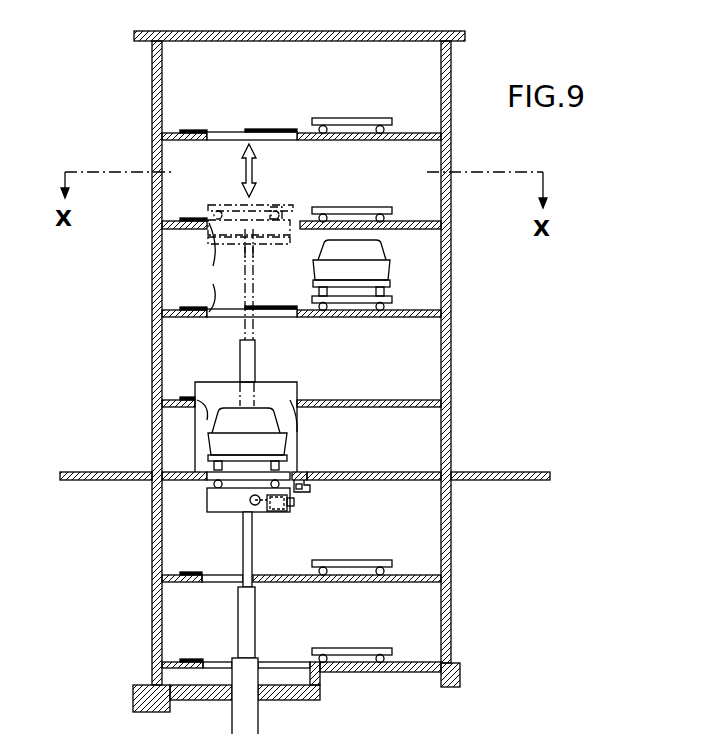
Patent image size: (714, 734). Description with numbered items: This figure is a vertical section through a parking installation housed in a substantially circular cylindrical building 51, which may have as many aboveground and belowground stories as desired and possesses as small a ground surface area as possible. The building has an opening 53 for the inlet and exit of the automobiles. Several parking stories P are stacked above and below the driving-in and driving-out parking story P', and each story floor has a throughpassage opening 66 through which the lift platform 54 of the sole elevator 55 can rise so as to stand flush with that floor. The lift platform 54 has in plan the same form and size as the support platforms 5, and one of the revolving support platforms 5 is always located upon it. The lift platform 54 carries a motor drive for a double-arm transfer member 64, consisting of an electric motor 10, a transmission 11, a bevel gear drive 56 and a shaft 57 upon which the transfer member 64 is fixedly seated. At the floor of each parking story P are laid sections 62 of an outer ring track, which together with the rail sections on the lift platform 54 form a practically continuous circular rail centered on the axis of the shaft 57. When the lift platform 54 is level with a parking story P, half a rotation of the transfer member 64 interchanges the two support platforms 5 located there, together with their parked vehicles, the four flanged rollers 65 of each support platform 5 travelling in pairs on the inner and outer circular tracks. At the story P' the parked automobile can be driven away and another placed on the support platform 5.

The support platform 5 is at (353, 118).
The electric motor 10 is at (258, 512).
The transmission 11 is at (285, 513).
The building 51 is at (452, 372).
The opening 53 is at (287, 400).
The lift platform 54 is at (240, 490).
The elevator 55 is at (245, 622).
The bevel gear drive 56 is at (296, 503).
The shaft 57 is at (311, 490).
The outer ring track section 62 is at (275, 130).
The transfer member 64 is at (305, 472).
The flanged rollers 65 is at (372, 140).
The throughpassage opening 66 is at (207, 470).
The parking story P is at (305, 368).
The driving-in and driving-out parking story P' is at (398, 425).